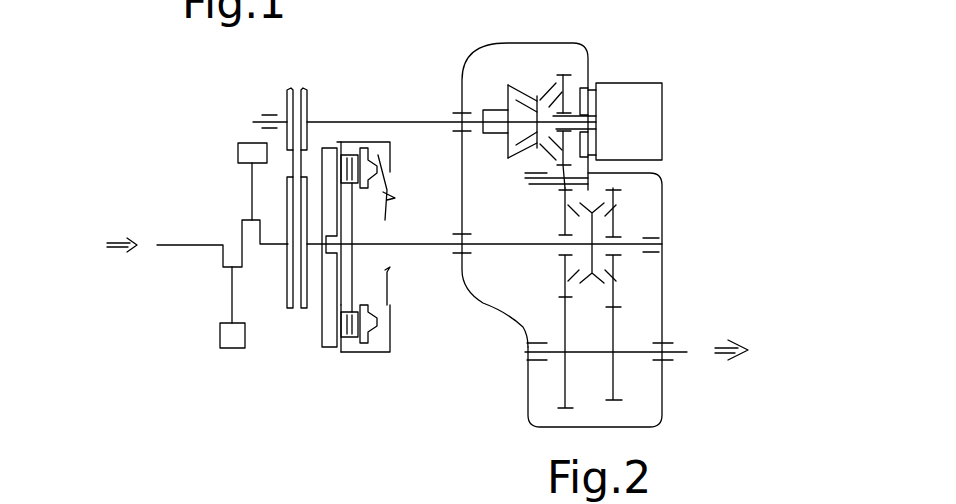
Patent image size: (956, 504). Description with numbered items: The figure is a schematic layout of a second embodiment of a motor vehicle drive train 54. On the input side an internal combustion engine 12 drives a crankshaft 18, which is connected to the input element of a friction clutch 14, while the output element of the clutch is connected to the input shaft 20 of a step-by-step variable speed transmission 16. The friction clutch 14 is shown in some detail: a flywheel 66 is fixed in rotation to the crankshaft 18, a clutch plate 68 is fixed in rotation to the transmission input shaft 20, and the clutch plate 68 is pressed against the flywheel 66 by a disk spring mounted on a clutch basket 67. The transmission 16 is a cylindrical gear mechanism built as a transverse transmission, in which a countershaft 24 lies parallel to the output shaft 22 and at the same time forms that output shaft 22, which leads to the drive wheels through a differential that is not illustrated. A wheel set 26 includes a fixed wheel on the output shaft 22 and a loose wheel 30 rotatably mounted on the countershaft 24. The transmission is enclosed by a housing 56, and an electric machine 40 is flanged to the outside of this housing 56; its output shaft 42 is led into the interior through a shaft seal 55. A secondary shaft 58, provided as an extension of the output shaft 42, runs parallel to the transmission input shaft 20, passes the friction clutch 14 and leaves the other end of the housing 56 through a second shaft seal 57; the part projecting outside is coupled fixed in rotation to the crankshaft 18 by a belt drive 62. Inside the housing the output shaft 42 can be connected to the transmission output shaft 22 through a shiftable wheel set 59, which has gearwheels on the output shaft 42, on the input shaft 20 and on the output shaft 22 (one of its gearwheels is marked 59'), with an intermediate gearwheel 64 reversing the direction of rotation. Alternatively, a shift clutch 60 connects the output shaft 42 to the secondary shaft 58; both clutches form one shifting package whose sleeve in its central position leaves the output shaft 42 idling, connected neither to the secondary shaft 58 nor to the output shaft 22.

The internal combustion engine 12 is at (222, 255).
The friction clutch 14 is at (376, 360).
The step-by-step variable speed transmission 16 is at (685, 237).
The crankshaft 18 is at (280, 247).
The input shaft 20 is at (427, 246).
The output shaft 22 is at (680, 350).
The countershaft 24 is at (600, 351).
The wheel set 26 is at (684, 0).
The loose wheel 30 is at (430, 0).
The electric machine 40 is at (662, 83).
The output shaft of the electric machine 42 is at (600, 133).
The drive train 54 is at (204, 133).
The shaft seal 55 is at (583, 110).
The housing 56 is at (507, 318).
The shaft seal 57 is at (462, 137).
The secondary shaft 58 is at (413, 121).
The wheel set 59 is at (602, 98).
The shaft end 59' is at (296, 486).
The shift clutch 60 is at (512, 78).
The belt drive 62 is at (296, 315).
The intermediate gearwheel 64 is at (563, 178).
The flywheel 66 is at (331, 337).
The clutch basket 67 is at (367, 141).
The clutch plate 68 is at (353, 338).